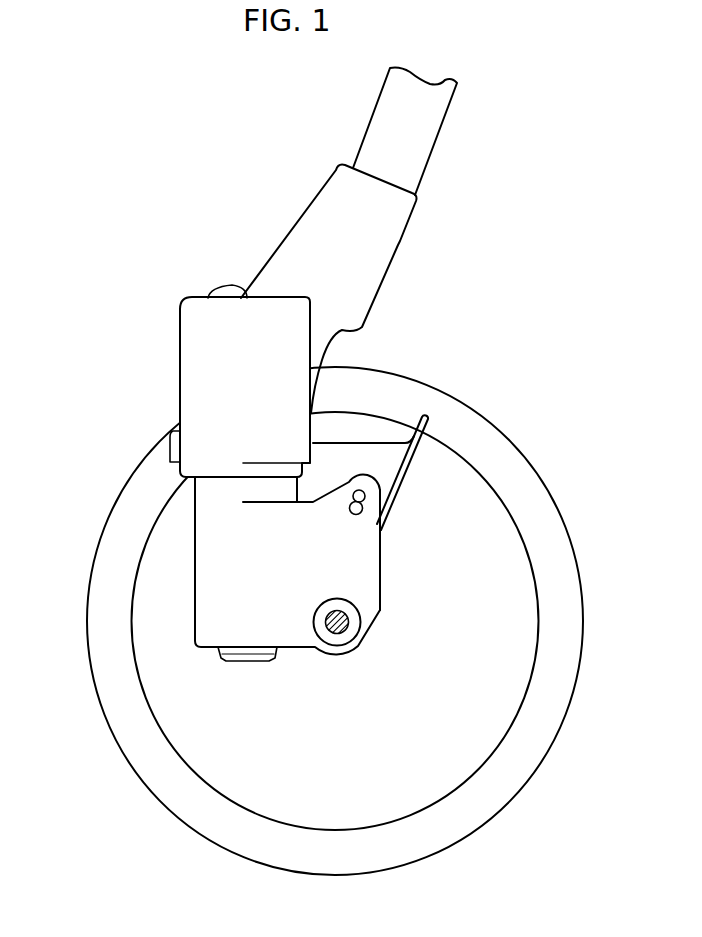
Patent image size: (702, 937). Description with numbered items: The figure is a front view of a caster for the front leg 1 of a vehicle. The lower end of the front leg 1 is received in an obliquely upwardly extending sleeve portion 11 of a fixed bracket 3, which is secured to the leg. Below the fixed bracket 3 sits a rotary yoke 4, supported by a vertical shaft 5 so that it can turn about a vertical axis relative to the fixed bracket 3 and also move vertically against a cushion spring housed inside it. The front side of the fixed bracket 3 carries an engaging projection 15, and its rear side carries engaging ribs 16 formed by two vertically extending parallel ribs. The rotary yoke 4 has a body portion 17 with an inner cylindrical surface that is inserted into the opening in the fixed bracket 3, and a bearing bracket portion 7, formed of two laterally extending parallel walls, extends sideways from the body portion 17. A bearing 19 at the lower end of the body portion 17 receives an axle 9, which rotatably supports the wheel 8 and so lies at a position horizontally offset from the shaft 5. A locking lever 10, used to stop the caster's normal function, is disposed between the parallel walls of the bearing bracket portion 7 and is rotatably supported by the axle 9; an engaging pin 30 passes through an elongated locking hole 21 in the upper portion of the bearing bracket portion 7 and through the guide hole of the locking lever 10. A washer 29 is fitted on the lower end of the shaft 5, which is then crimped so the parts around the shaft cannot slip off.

The front leg 1 is at (432, 127).
The sleeve portion 11 is at (398, 222).
The vertical shaft 5 is at (231, 284).
The fixed bracket 3 is at (178, 339).
The engaging projection 15 is at (173, 447).
The engaging ribs 16 is at (303, 432).
The locking lever 10 is at (427, 417).
The rotary yoke 4 is at (194, 568).
The body portion 17 is at (208, 588).
The elongated locking hole 21 is at (365, 497).
The engaging pin 30 is at (355, 514).
The bearing bracket portion 7 is at (373, 565).
The bearing 19 is at (353, 623).
The axle 9 is at (340, 630).
The wheel 8 is at (566, 526).
The washer 29 is at (215, 650).